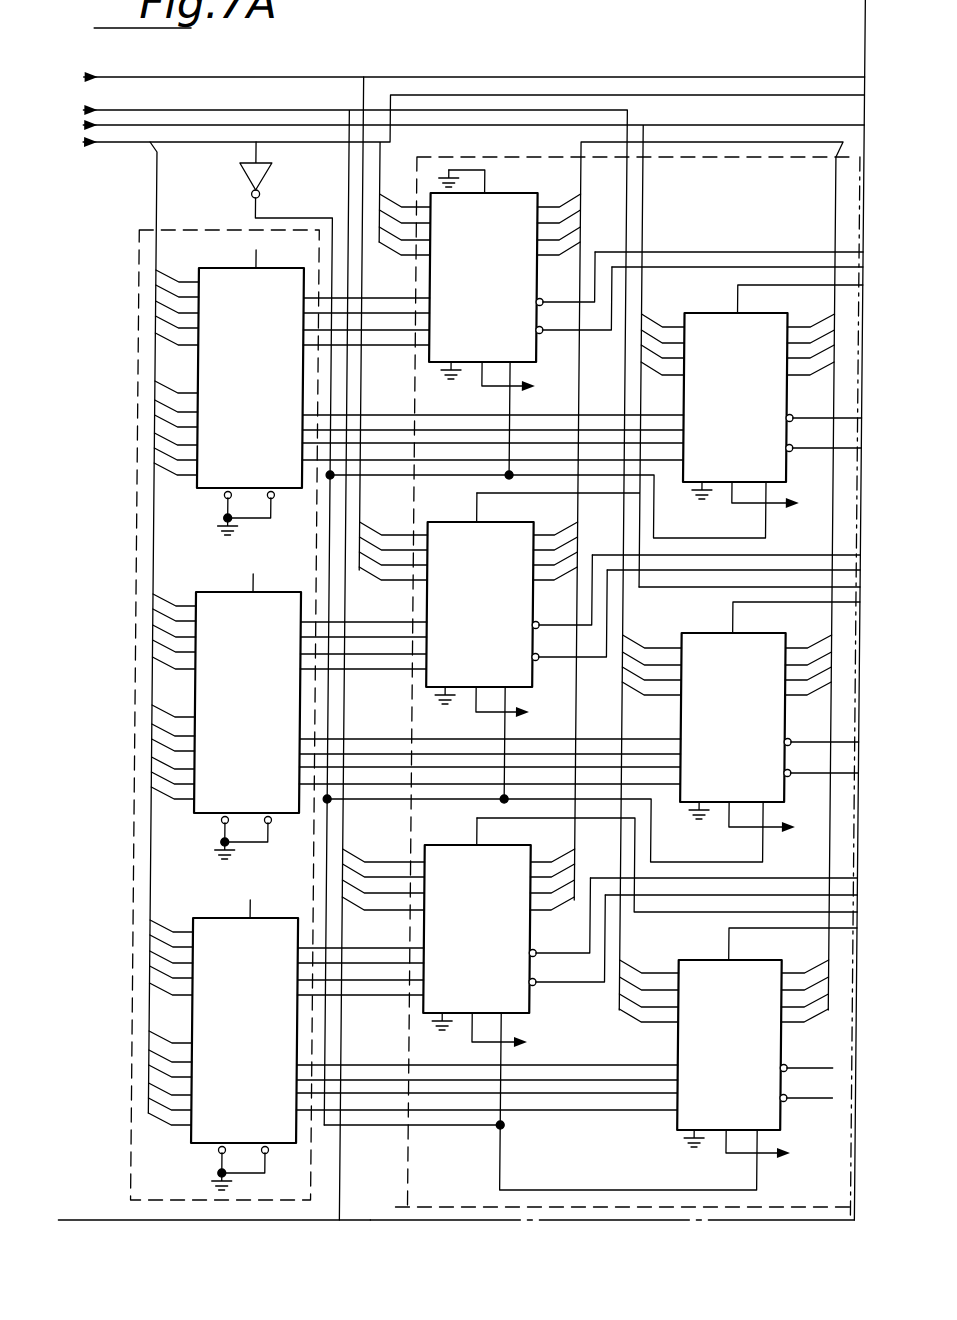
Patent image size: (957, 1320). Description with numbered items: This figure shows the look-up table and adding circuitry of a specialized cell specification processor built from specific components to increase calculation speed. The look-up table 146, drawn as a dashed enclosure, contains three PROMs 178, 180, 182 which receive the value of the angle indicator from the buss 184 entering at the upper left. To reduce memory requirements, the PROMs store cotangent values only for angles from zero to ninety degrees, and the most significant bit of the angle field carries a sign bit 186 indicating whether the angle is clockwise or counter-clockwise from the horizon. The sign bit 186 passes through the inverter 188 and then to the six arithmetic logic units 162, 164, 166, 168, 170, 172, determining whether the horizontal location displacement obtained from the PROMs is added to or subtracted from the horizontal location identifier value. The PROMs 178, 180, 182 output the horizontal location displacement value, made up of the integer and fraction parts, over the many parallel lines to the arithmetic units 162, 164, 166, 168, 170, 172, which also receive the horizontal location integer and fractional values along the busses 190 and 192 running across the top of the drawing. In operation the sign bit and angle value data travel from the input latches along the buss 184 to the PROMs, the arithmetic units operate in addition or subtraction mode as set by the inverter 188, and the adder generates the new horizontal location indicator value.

The look-up table 146 is at (141, 232).
The arithmetic unit 162 is at (517, 198).
The arithmetic unit 164 is at (456, 520).
The arithmetic unit 166 is at (454, 842).
The arithmetic unit 168 is at (712, 317).
The arithmetic unit 170 is at (704, 632).
The arithmetic unit 172 is at (692, 965).
The PROM 178 is at (230, 268).
The PROM 180 is at (230, 592).
The PROM 182 is at (230, 918).
The buss 184 is at (118, 146).
The sign bit 186 is at (211, 146).
The inverter 188 is at (274, 174).
The buss 190 is at (188, 75).
The buss 192 is at (188, 109).